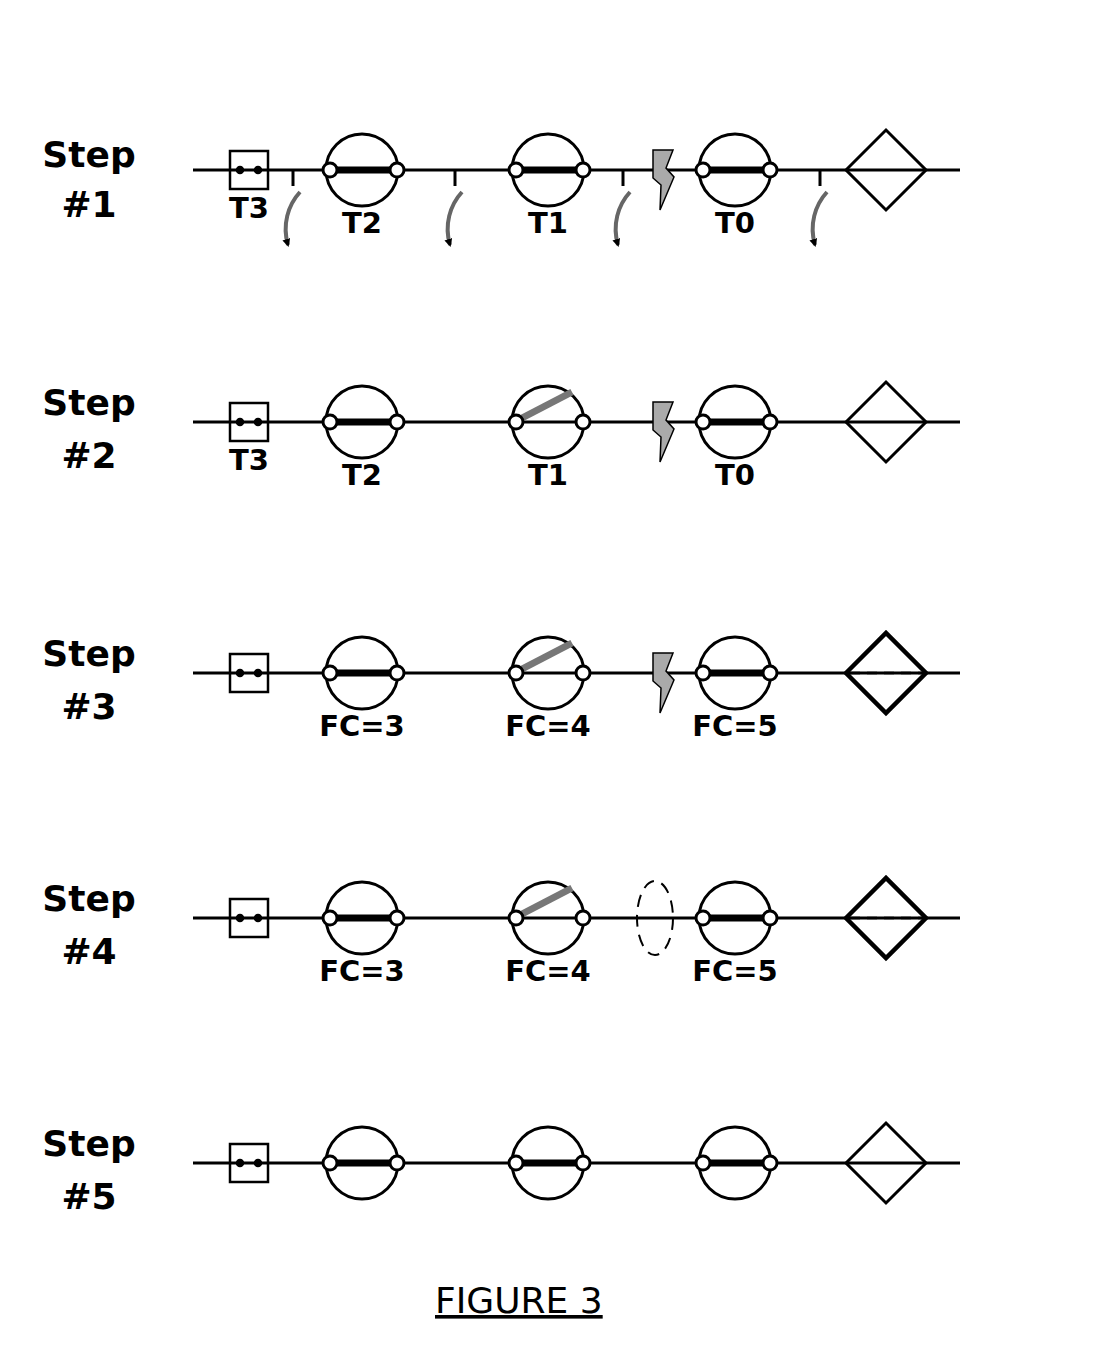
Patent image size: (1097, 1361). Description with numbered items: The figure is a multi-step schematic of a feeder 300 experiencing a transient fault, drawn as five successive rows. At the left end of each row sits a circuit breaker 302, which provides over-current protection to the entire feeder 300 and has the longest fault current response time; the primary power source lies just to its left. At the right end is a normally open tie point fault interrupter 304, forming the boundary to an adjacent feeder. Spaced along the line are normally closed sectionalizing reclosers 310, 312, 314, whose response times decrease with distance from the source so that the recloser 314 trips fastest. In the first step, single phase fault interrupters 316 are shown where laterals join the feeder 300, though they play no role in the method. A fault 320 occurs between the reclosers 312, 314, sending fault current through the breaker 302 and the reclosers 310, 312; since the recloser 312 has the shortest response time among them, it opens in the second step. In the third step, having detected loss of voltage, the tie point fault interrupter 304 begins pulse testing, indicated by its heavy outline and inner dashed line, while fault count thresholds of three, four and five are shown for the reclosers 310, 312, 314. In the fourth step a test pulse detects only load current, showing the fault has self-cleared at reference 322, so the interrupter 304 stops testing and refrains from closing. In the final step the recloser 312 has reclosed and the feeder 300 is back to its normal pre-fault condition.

The feeder 300 is at (272, 52).
The circuit breaker 302 is at (247, 151).
The tie point fault interrupter 304 is at (866, 149).
The sectionalizing recloser 310 is at (363, 666).
The sectionalizing recloser 312 is at (549, 666).
The sectionalizing recloser 314 is at (736, 666).
The single phase fault interrupter 316 is at (440, 242).
The fault 320 is at (663, 149).
The self-cleared fault indication 322 is at (652, 872).